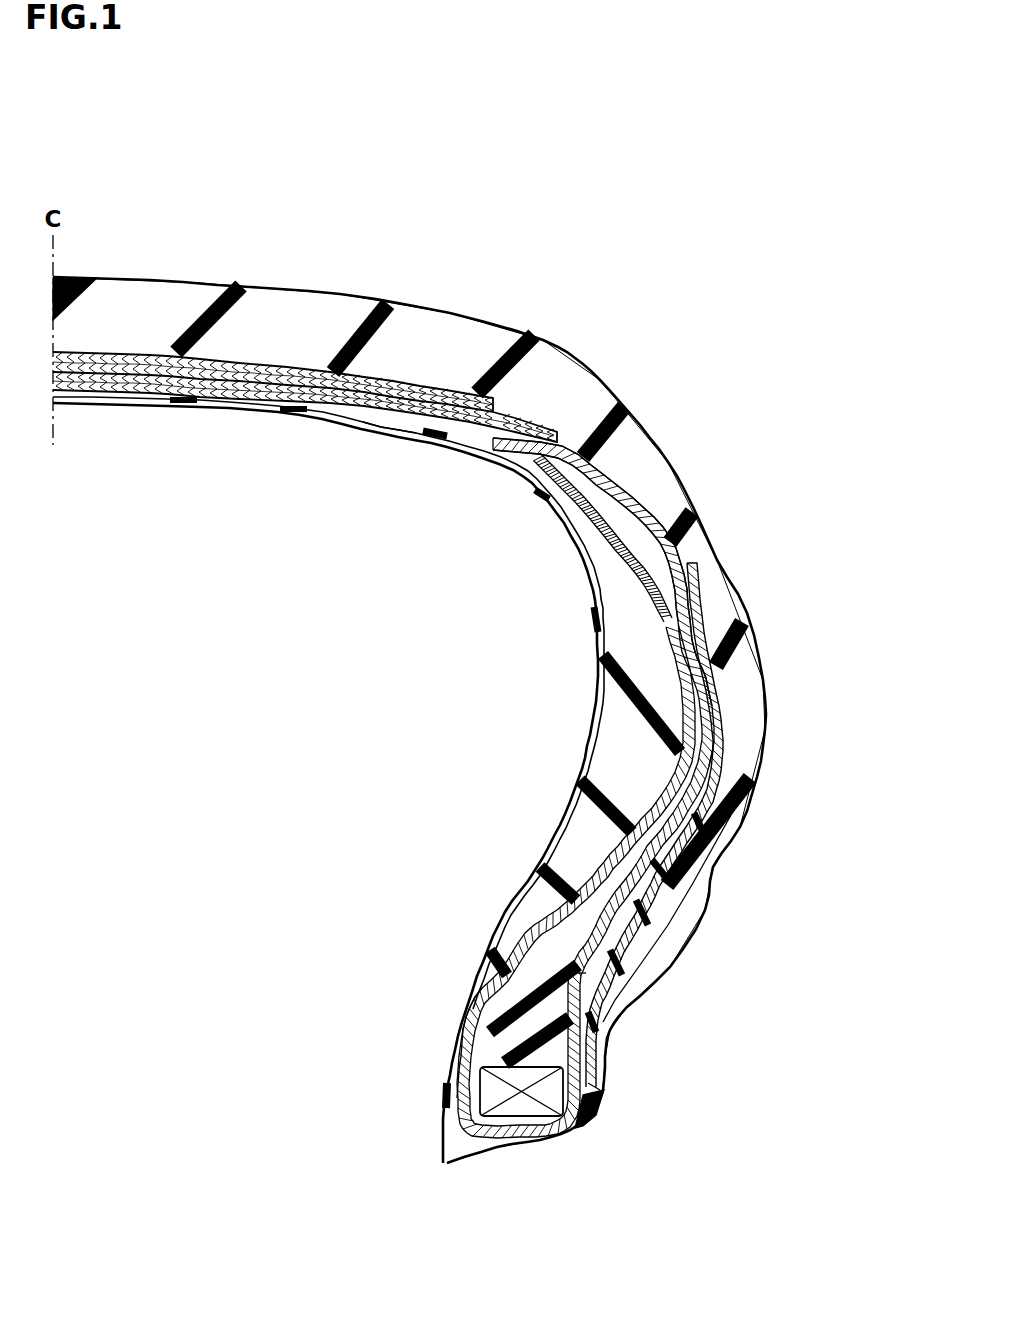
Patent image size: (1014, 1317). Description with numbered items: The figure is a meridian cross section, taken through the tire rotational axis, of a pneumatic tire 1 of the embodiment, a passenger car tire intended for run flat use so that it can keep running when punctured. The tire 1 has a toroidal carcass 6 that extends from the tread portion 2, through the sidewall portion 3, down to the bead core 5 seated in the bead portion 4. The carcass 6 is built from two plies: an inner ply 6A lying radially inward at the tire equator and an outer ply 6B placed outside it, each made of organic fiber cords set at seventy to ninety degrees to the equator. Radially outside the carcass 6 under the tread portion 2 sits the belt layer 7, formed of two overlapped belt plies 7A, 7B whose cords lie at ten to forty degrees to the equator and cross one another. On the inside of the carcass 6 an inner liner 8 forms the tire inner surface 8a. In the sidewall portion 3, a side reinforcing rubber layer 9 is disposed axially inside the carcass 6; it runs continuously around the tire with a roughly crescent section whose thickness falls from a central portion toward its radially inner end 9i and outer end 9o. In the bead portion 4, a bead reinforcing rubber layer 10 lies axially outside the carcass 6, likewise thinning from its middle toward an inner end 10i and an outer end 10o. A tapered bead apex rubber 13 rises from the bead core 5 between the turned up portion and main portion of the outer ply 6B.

The pneumatic tire 1 is at (612, 278).
The tread portion 2 is at (208, 280).
The sidewall portion 3 is at (777, 677).
The bead portion 4 is at (673, 972).
The bead core 5 is at (527, 1103).
The carcass 6 is at (725, 353).
The inner ply 6A is at (610, 487).
The outer ply 6B is at (653, 517).
The belt layer 7 is at (345, 222).
The belt ply 7A is at (417, 397).
The belt ply 7B is at (285, 370).
The inner liner 8 is at (325, 412).
The tire inner surface 8a is at (193, 405).
The side reinforcing rubber layer 9 is at (643, 647).
The outer end 9o is at (390, 425).
The inner end 9i is at (470, 1013).
The bead reinforcing rubber layer 10 is at (647, 887).
The outer end 10o is at (710, 773).
The inner end 10i is at (587, 1090).
The bead apex rubber 13 is at (500, 920).